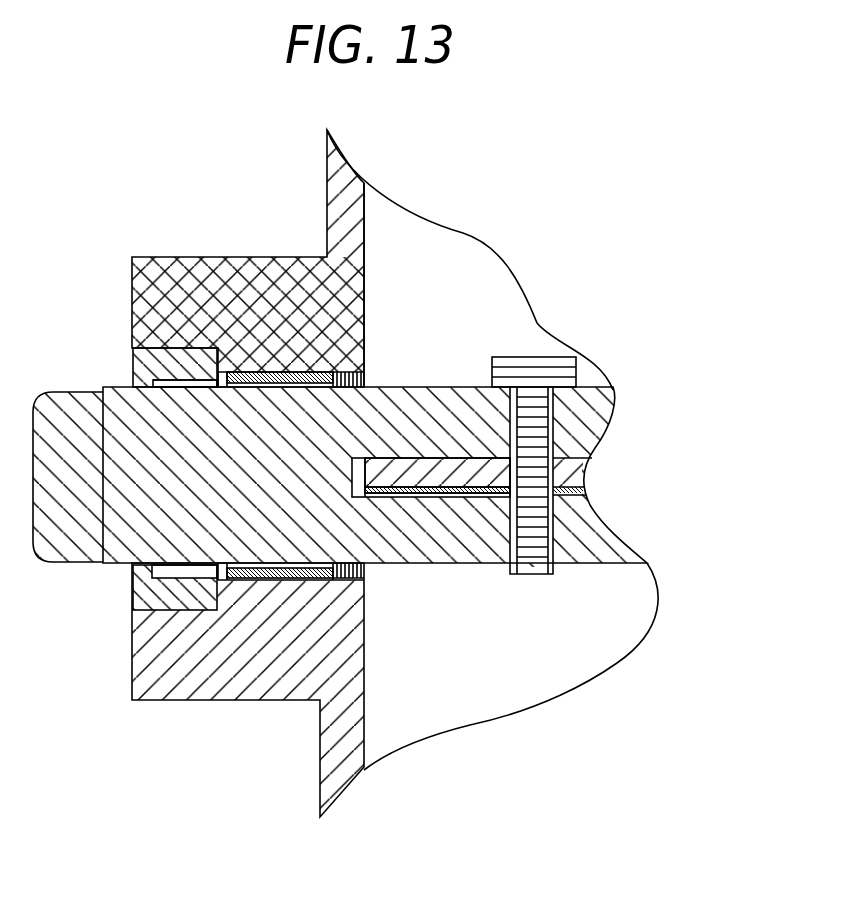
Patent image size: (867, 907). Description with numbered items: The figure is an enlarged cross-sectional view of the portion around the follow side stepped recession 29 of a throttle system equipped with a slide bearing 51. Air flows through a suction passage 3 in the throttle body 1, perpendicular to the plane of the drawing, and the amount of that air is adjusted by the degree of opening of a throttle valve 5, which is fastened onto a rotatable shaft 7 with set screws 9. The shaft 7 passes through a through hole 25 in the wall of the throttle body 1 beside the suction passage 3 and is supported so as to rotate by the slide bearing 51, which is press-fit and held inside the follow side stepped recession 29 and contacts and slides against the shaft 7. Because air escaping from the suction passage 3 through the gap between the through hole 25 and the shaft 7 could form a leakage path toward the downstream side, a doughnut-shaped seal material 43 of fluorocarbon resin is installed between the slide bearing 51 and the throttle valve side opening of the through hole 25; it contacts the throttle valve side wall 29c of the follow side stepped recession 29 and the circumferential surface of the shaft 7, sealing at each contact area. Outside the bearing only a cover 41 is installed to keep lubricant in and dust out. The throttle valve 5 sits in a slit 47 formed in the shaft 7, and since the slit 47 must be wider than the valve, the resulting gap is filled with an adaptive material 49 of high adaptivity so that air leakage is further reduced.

The throttle body 1 is at (192, 672).
The suction passage 3 is at (457, 270).
The throttle valve 5 is at (590, 415).
The shaft 7 is at (597, 535).
The set screws 9 is at (577, 357).
The through hole 25 is at (363, 387).
The follow side stepped recession 29 is at (257, 365).
The throttle valve side wall 29c is at (352, 372).
The cover 41 is at (135, 350).
The seal material 43 is at (288, 372).
The slit 47 is at (467, 493).
The adaptive material 49 is at (413, 472).
The slide bearing 51 is at (215, 350).